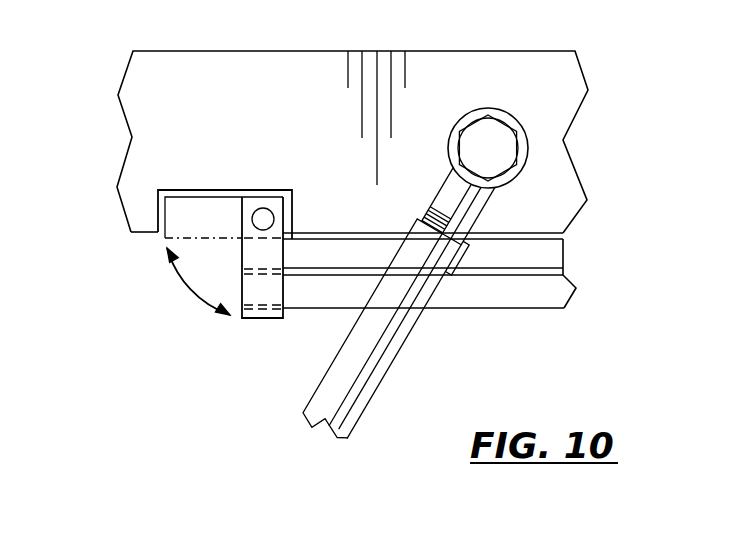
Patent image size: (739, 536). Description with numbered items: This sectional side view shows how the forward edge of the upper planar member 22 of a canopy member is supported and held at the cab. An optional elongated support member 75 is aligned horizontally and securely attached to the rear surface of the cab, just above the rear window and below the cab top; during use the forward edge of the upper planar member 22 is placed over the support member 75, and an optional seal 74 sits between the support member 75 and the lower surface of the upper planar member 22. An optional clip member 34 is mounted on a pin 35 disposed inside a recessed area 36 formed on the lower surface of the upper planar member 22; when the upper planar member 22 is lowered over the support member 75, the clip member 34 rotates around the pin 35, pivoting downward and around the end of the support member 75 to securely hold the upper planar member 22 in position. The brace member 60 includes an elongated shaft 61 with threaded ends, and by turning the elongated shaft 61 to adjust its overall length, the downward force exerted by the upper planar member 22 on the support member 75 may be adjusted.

The upper planar member 22 is at (300, 50).
The clip member 34 is at (278, 257).
The pin 35 is at (265, 208).
The recessed area 36 is at (192, 190).
The brace member 60 is at (395, 337).
The elongated shaft 61 is at (343, 378).
The seal 74 is at (538, 256).
The support member 75 is at (515, 300).